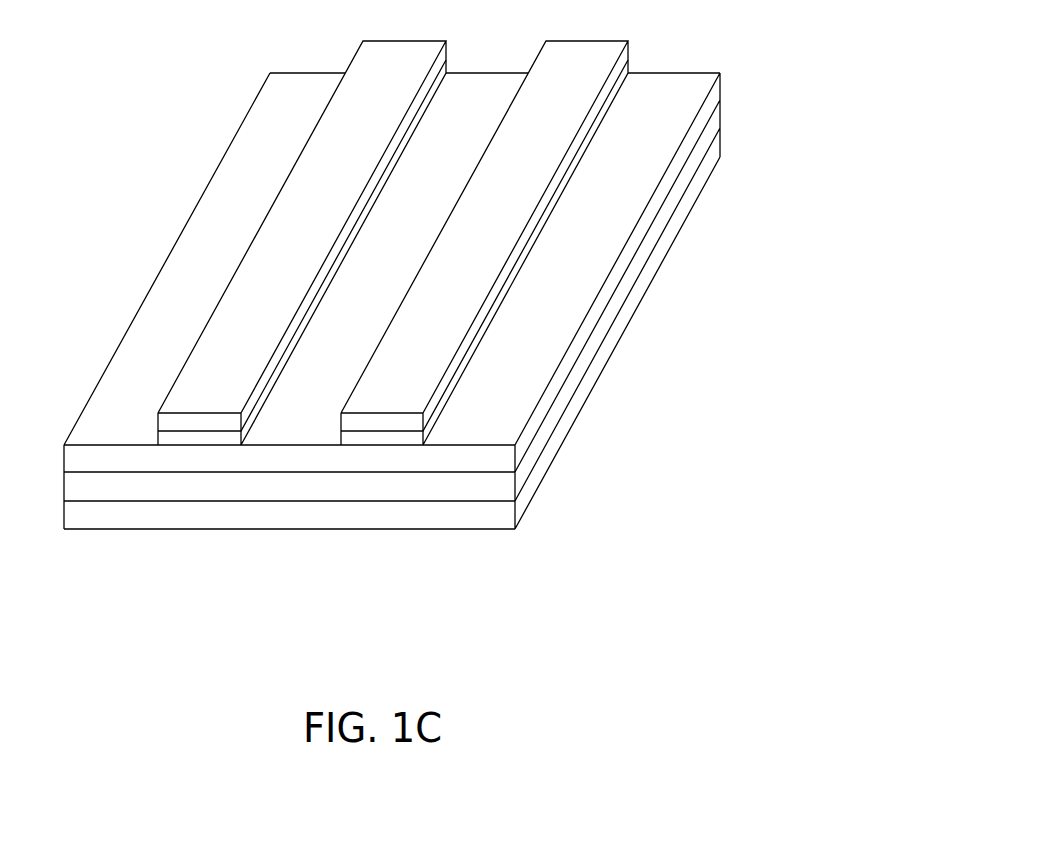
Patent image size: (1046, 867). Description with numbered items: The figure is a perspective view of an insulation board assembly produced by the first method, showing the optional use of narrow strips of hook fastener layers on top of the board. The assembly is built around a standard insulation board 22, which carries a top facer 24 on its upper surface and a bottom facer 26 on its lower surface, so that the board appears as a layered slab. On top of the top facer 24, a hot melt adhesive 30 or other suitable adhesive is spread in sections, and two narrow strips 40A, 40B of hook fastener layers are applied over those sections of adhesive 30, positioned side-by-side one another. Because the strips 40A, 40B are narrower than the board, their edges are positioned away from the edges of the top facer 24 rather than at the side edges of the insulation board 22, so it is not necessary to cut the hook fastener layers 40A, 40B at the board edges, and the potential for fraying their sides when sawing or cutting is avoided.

The insulation board 22 is at (418, 488).
The top facer 24 is at (250, 128).
The bottom facer 26 is at (293, 513).
The hot melt adhesive 30 is at (158, 430).
The strip of hook fastener layer 40A is at (250, 297).
The strip of hook fastener layer 40B is at (520, 205).